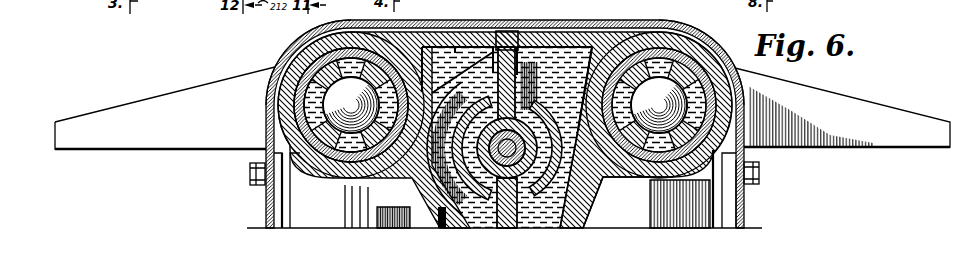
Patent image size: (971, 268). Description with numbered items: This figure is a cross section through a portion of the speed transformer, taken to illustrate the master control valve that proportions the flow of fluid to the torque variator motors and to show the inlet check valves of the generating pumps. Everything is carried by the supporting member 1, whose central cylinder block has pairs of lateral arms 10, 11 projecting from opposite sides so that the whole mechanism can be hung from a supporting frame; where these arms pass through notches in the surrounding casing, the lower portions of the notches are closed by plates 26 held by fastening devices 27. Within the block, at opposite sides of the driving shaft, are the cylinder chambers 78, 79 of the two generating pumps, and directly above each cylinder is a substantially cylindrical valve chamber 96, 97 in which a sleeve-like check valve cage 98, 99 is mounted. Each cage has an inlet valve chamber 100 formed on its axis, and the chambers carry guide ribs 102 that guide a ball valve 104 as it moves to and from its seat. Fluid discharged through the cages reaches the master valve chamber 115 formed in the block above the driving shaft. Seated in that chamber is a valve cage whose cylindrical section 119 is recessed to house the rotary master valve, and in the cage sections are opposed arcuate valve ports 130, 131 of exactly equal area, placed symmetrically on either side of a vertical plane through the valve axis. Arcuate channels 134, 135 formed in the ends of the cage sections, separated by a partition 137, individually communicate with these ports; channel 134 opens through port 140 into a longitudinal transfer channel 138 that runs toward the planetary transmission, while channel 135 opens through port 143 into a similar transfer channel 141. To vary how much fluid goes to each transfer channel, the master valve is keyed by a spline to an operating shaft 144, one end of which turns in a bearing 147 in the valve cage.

The supporting member 1 is at (657, 31).
The lateral arm 10 is at (191, 89).
The lateral arm 11 is at (806, 94).
The plate 26 is at (730, 197).
The fastening device 27 is at (760, 167).
The cylinder chamber 78 is at (302, 200).
The cylinder chamber 79 is at (713, 213).
The valve chamber 96 is at (278, 62).
The valve chamber 97 is at (688, 57).
The check valve cage 98 is at (300, 90).
The check valve cage 99 is at (719, 62).
The inlet valve chamber 100 is at (305, 110).
The guide rib 102 is at (367, 31).
The ball valve 104 is at (338, 178).
The master valve chamber 115 is at (357, 187).
The cylindrical section 119 is at (540, 50).
The arcuate valve port 130 is at (411, 217).
The arcuate valve port 131 is at (593, 209).
The arcuate channel 134 is at (420, 195).
The arcuate channel 135 is at (588, 202).
The partition 137 is at (481, 31).
The transfer channel 138 is at (476, 30).
The port 140 is at (455, 47).
The transfer channel 141 is at (577, 45).
The port 143 is at (534, 47).
The operating shaft 144 is at (597, 183).
The bearing 147 is at (607, 206).